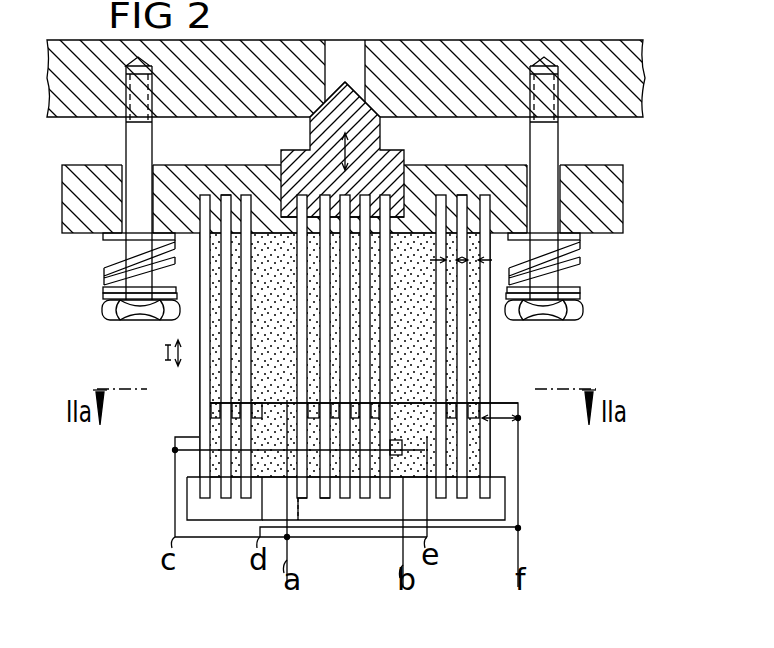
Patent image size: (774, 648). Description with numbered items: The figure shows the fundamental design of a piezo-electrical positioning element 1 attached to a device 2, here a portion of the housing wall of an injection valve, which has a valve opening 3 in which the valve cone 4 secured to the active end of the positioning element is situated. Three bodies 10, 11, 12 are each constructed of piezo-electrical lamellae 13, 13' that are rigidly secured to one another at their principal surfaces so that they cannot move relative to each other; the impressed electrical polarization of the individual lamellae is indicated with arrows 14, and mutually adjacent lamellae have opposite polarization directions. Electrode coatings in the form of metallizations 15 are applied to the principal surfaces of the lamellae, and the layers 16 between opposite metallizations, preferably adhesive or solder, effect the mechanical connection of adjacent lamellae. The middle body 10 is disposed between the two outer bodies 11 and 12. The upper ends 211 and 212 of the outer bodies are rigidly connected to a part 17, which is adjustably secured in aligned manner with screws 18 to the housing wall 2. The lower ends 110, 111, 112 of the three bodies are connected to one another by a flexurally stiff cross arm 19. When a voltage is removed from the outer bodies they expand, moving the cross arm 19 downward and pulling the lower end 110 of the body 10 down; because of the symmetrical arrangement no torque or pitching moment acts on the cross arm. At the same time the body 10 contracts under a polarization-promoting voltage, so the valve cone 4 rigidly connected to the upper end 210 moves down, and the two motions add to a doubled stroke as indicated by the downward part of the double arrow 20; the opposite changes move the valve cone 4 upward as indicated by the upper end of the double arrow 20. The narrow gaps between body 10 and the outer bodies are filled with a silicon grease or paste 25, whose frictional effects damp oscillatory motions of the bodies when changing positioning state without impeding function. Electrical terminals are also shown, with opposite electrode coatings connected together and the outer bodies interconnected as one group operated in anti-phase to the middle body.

The positioning element 1 is at (164, 448).
The device 2 is at (482, 56).
The valve opening 3 is at (357, 50).
The valve cone 4 is at (336, 88).
The piezo-electrical body 10 is at (349, 480).
The piezo-electrical body 11 is at (489, 431).
The piezo-electrical body 12 is at (220, 397).
The piezo-electrical lamella 13 is at (377, 355).
The piezo-electrical lamella 13' is at (288, 355).
The arrows 14 is at (487, 262).
The metallization 15 is at (480, 393).
The layer 16 is at (237, 333).
The part 17 is at (600, 182).
The screws 18 is at (104, 310).
The cross arm 19 is at (462, 510).
The double arrow 20 is at (343, 158).
The silicon paste 25 is at (260, 350).
The lower end of body 10 110 is at (325, 493).
The lower end of body 11 111 is at (463, 495).
The lower end of body 12 112 is at (205, 495).
The upper end of body 10 210 is at (350, 195).
The upper end of body 11 211 is at (460, 197).
The upper end of body 12 212 is at (230, 197).